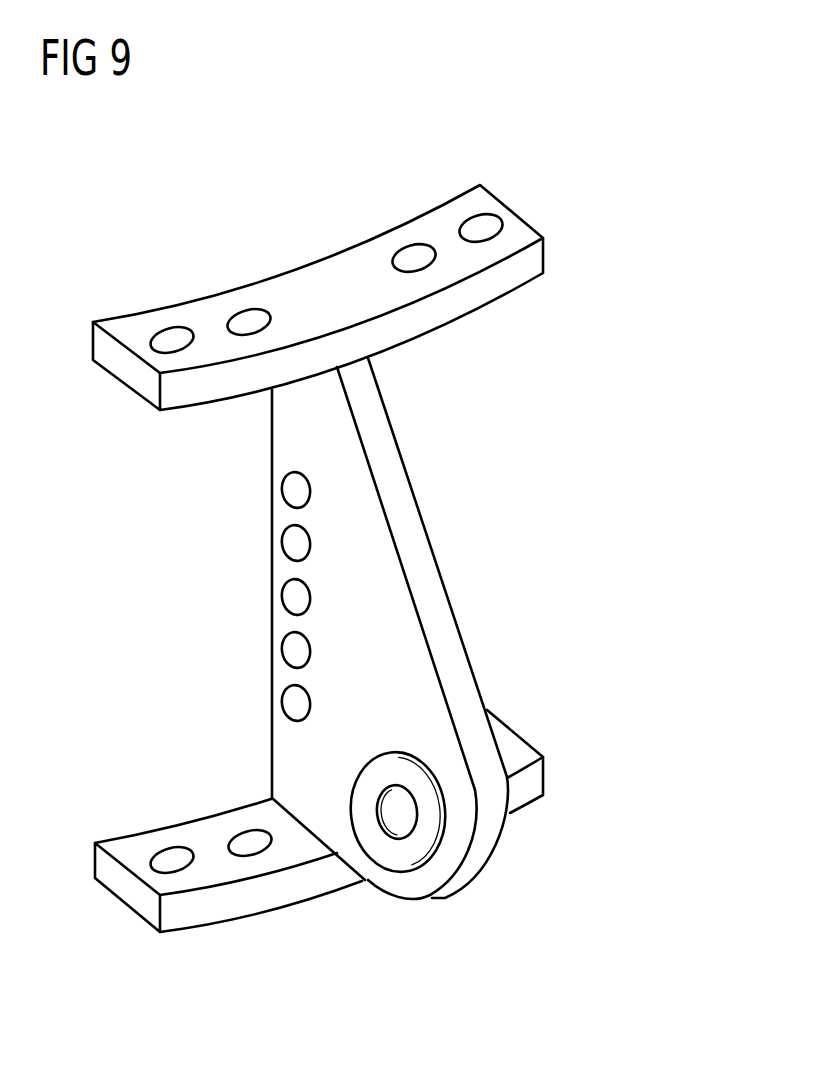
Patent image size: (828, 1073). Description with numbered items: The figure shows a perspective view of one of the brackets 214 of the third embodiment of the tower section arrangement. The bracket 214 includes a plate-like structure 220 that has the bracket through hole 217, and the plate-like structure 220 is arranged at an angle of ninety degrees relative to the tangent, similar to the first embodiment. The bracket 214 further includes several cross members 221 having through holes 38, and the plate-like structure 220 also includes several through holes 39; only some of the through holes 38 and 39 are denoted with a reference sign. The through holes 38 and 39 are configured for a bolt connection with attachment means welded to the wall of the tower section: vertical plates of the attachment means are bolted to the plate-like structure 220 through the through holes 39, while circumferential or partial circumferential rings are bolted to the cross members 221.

The bracket 214 is at (588, 168).
The cross members 221 is at (545, 255).
The through holes 38 is at (162, 328).
The through holes 39 is at (281, 488).
The plate-like structure 220 is at (452, 653).
The bracket through hole 217 is at (398, 822).